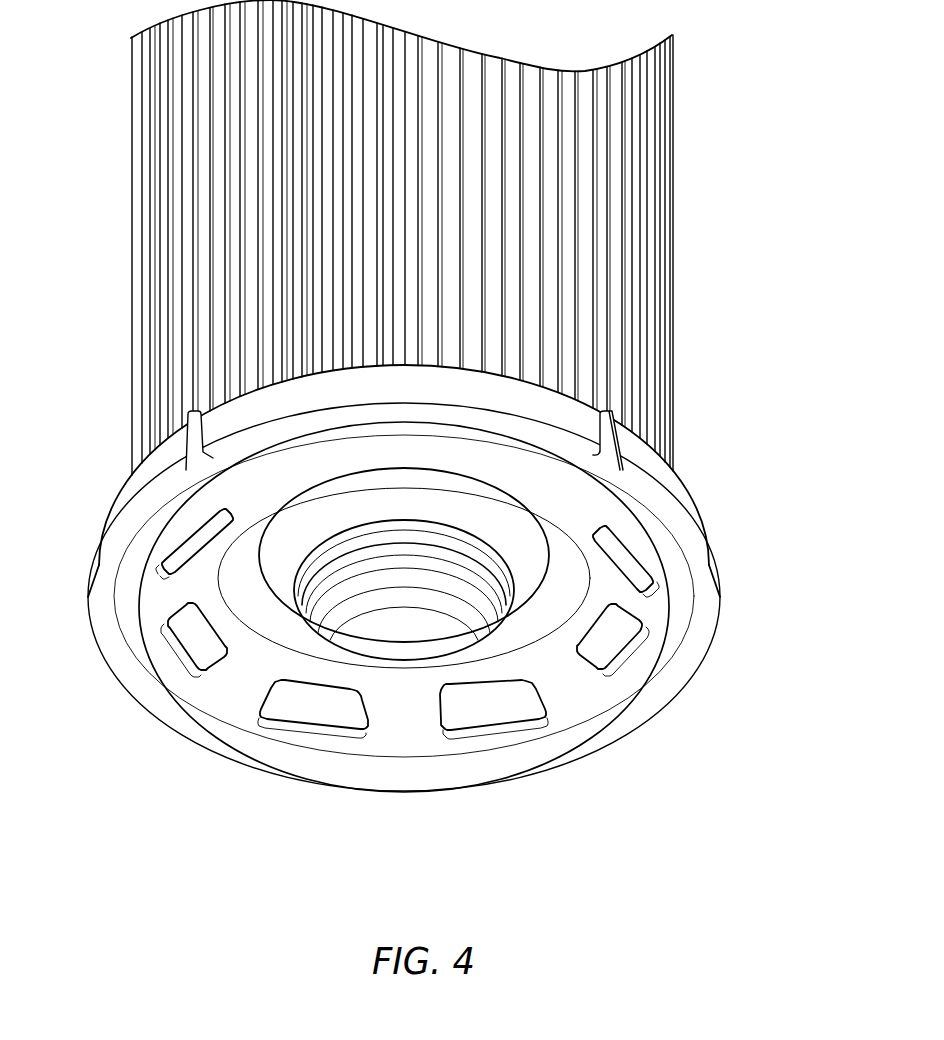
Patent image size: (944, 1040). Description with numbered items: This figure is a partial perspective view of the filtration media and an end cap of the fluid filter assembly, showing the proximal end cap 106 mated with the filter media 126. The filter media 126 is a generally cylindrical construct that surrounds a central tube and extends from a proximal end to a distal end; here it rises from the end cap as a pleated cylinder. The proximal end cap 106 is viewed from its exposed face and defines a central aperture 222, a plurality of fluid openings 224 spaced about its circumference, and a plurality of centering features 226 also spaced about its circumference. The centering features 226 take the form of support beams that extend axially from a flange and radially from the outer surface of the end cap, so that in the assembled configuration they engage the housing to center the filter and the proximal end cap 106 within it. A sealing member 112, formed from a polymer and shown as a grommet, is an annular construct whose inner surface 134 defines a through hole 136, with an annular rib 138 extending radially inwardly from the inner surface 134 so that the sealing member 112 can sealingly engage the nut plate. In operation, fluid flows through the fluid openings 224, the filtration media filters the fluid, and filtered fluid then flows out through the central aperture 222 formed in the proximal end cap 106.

The proximal end cap 106 is at (707, 665).
The sealing member 112 is at (527, 603).
The filter media 126 is at (673, 226).
The inner surface 134 is at (404, 642).
The through hole 136 is at (380, 527).
The annular rib 138 is at (328, 583).
The central aperture 222 is at (432, 556).
The fluid openings 224 is at (463, 703).
The centering features 226 is at (183, 447).